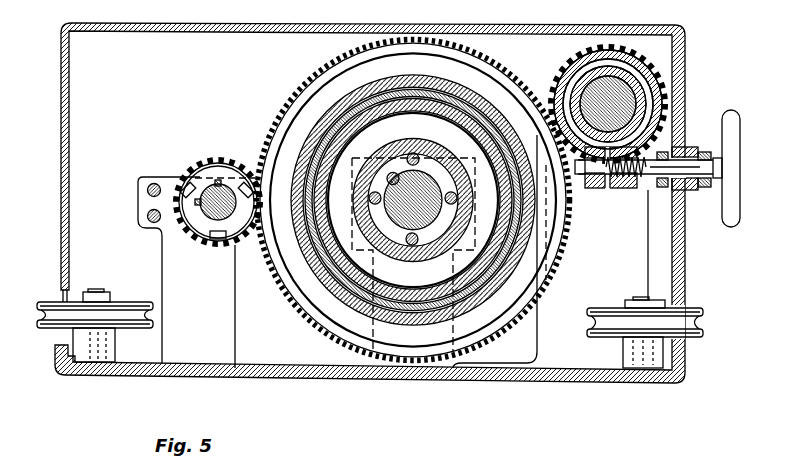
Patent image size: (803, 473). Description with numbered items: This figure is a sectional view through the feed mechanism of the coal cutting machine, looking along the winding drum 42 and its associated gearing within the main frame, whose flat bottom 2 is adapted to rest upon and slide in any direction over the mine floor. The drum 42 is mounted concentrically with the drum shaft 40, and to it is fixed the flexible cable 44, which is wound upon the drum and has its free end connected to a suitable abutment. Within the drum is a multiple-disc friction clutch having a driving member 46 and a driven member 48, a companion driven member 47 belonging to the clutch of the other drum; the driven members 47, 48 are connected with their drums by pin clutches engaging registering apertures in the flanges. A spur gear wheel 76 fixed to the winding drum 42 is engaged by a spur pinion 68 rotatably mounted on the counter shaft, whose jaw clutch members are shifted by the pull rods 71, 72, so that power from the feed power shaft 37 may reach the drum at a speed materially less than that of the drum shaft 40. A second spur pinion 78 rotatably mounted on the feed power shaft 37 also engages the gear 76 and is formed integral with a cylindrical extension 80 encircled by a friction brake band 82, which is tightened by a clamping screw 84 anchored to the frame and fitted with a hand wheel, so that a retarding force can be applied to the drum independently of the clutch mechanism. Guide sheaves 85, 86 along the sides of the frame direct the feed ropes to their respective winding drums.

The flat bottom 2 is at (446, 379).
The feed power shaft 37 is at (648, 90).
The drum shaft 40 is at (392, 217).
The winding drum 42 is at (287, 108).
The flexible cable 44 is at (351, 116).
The driving member 46 is at (394, 150).
The driven member 47 is at (526, 218).
The driven member 48 is at (507, 219).
The spur pinion 68 is at (216, 157).
The pull rod 71 is at (148, 220).
The pull rod 72 is at (150, 186).
The spur gear wheel 76 is at (503, 329).
The spur pinion 78 is at (565, 72).
The cylindrical extension 80 is at (629, 64).
The friction brake band 82 is at (650, 62).
The clamping screw 84 is at (609, 189).
The guide sheave 85 is at (703, 321).
The guide sheave 86 is at (53, 303).